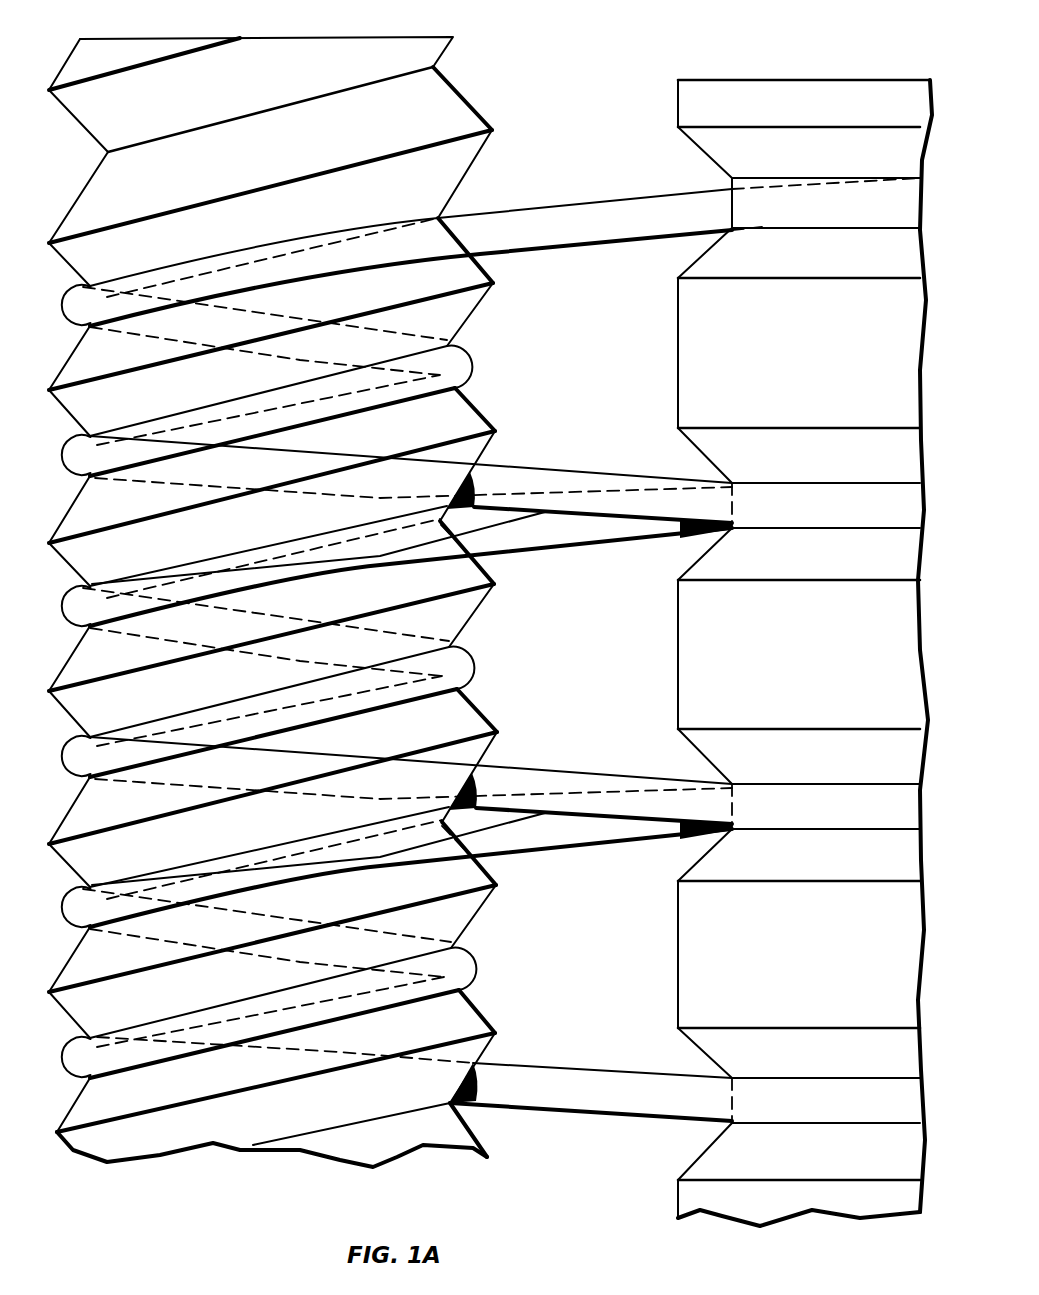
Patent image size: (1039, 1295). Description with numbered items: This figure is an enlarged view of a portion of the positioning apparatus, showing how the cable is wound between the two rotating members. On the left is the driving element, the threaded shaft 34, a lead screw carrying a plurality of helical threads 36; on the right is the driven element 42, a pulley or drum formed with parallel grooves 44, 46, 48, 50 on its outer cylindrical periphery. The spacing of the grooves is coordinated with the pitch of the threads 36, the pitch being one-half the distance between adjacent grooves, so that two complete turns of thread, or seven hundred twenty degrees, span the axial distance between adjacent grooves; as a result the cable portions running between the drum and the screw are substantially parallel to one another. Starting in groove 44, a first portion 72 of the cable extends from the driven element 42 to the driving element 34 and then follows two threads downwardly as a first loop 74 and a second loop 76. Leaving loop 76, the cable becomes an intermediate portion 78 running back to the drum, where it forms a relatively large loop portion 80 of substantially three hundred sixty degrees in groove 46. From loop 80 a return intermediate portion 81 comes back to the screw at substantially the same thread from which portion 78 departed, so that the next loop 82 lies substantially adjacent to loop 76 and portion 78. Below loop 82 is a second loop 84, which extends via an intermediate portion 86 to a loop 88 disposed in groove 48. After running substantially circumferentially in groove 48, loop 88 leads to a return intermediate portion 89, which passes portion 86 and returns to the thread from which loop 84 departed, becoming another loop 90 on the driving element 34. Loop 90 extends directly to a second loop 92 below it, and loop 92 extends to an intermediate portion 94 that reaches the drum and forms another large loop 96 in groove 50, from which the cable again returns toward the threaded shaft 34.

The threaded shaft 34 is at (487, 57).
The threads 36 is at (468, 96).
The driven element 42 is at (757, 80).
The groove 44 is at (690, 150).
The groove 46 is at (688, 448).
The groove 48 is at (688, 748).
The groove 50 is at (688, 1042).
The first portion 72 is at (606, 210).
The first loop 74 is at (58, 296).
The second loop 76 is at (60, 449).
The intermediate portion 78 is at (552, 480).
The loop portion 80 is at (862, 500).
The return intermediate portion 81 is at (583, 542).
The loop 82 is at (62, 604).
The second loop 84 is at (64, 757).
The intermediate portion 86 is at (537, 782).
The loop 88 is at (875, 800).
The return intermediate portion 89 is at (540, 838).
The loop 90 is at (62, 897).
The second loop 92 is at (62, 1052).
The intermediate portion 94 is at (560, 1083).
The loop 96 is at (878, 1097).